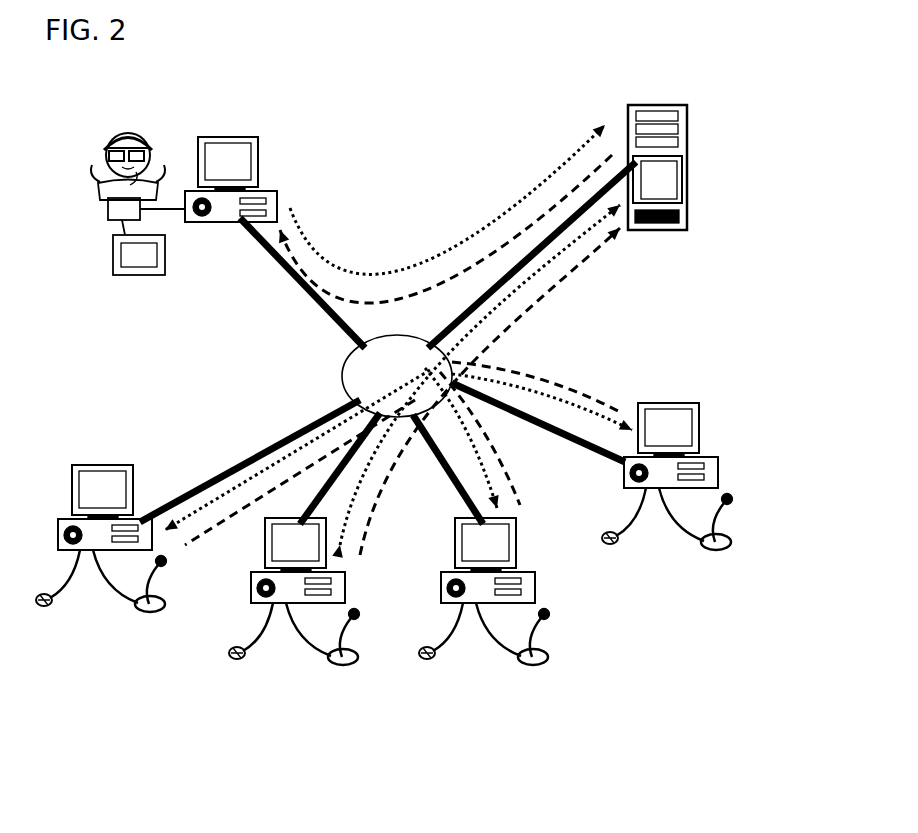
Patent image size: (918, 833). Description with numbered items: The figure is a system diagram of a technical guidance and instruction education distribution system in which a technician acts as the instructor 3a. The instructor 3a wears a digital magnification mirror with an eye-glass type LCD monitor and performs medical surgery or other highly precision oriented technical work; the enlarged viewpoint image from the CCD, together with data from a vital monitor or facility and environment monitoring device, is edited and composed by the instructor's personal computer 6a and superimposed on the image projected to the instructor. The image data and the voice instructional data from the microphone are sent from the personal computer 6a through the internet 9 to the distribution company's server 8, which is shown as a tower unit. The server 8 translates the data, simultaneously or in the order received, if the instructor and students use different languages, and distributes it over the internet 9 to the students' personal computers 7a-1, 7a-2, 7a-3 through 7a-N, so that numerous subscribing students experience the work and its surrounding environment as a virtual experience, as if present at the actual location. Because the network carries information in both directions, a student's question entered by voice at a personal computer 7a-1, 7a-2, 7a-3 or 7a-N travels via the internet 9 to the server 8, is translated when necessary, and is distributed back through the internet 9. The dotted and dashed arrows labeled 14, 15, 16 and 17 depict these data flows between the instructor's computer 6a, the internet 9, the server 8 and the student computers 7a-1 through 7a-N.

The instructor 3a is at (128, 116).
The personal computer 6a is at (233, 128).
The internet 9 is at (368, 375).
The server 8 is at (658, 234).
The data flow 14 is at (447, 206).
The data flow 15 is at (480, 375).
The data flow 16 is at (490, 391).
The data flow 17 is at (446, 240).
The personal computer 7a-1 is at (98, 617).
The personal computer 7a-2 is at (292, 670).
The personal computer 7a-3 is at (480, 669).
The personal computer 7a-N is at (663, 555).